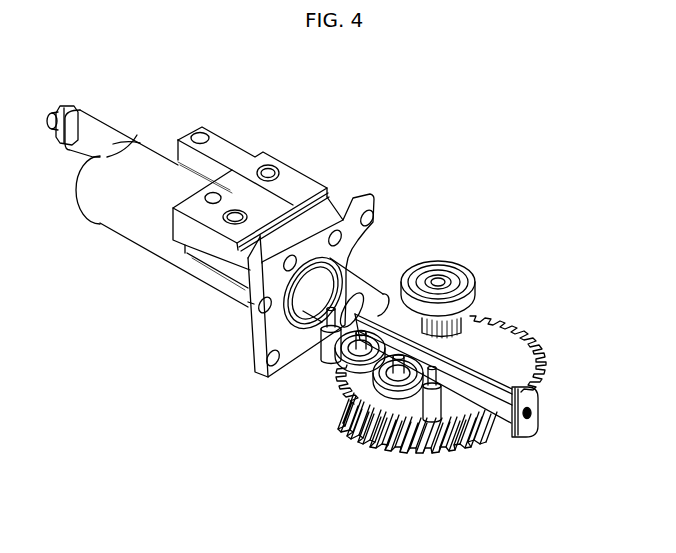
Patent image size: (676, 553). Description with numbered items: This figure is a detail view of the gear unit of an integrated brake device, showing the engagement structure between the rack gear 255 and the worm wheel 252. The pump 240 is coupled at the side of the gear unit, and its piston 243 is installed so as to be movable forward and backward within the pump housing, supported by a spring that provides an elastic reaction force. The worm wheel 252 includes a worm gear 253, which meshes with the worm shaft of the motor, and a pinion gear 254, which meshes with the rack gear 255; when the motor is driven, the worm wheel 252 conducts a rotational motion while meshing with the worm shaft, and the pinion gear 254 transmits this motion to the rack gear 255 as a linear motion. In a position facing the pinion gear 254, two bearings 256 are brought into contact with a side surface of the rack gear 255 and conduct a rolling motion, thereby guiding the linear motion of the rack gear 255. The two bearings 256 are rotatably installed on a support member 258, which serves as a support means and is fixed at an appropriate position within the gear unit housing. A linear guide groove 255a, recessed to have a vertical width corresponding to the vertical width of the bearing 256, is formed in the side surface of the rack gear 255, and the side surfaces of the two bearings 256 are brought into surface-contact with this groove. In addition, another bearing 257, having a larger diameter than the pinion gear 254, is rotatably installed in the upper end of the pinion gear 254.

The pump 240 is at (243, 137).
The piston 243 is at (331, 297).
The worm wheel 252 is at (612, 283).
The worm gear 253 is at (518, 343).
The pinion gear 254 is at (463, 327).
The rack gear 255 is at (530, 427).
The linear guide groove 255a is at (488, 452).
The bearing 256 is at (383, 390).
The bearing 257 is at (462, 263).
The support member 258 is at (393, 447).